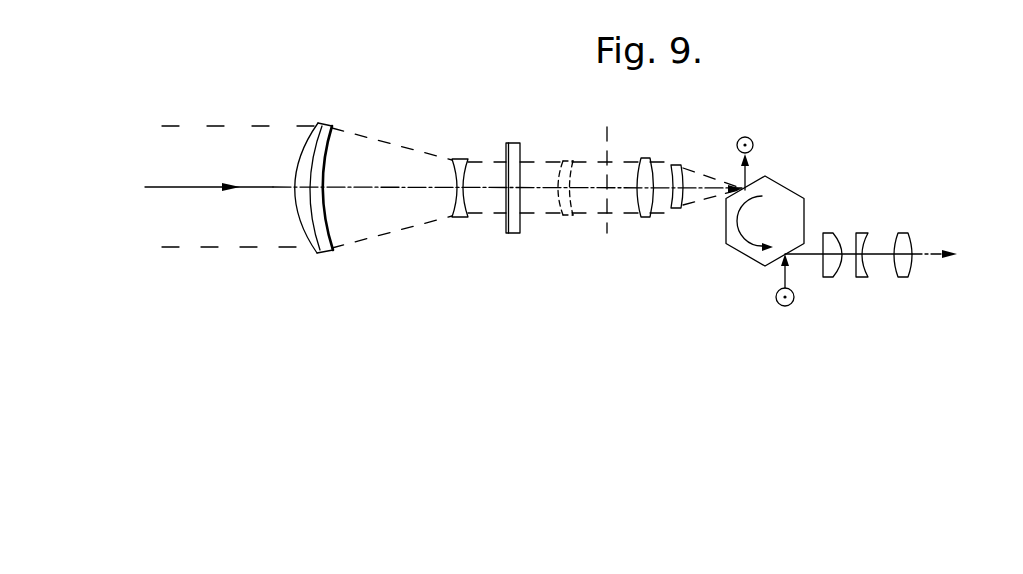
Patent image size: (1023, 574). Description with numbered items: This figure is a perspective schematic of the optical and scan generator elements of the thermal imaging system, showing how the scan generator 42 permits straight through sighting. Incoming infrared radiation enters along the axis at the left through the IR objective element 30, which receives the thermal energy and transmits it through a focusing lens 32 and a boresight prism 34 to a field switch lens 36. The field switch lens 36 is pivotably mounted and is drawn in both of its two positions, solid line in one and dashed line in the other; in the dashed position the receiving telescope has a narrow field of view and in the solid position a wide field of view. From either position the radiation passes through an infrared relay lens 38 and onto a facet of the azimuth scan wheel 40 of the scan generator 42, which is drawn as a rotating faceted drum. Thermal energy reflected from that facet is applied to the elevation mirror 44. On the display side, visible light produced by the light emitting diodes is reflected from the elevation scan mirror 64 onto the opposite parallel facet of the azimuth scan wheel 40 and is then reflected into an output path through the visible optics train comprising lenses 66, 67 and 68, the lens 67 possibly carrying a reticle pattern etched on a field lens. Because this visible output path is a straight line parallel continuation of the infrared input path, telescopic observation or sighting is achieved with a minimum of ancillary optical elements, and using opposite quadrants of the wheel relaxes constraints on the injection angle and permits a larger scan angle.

The IR objective element 30 is at (331, 126).
The focusing lens 32 is at (452, 215).
The boresight prism 34 is at (515, 150).
The field switch lens 36 is at (642, 218).
The infrared relay lens 38 is at (672, 166).
The azimuth scan wheel 40 is at (805, 200).
The scan generator 42 is at (807, 163).
The elevation mirror 44 is at (753, 138).
The elevation scan mirror 64 is at (778, 306).
The lens 66 is at (832, 278).
The lens 67 is at (867, 233).
The lens 68 is at (903, 276).